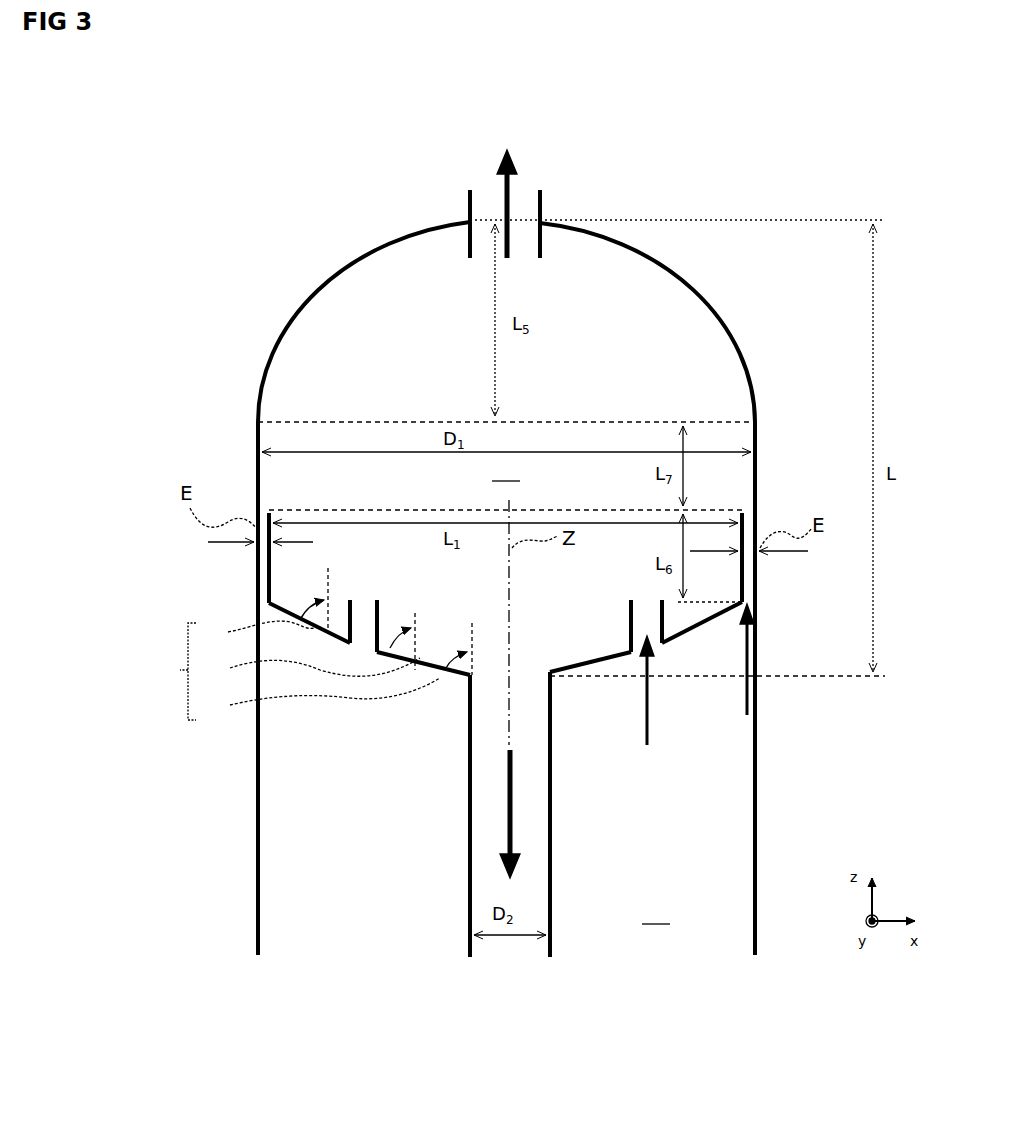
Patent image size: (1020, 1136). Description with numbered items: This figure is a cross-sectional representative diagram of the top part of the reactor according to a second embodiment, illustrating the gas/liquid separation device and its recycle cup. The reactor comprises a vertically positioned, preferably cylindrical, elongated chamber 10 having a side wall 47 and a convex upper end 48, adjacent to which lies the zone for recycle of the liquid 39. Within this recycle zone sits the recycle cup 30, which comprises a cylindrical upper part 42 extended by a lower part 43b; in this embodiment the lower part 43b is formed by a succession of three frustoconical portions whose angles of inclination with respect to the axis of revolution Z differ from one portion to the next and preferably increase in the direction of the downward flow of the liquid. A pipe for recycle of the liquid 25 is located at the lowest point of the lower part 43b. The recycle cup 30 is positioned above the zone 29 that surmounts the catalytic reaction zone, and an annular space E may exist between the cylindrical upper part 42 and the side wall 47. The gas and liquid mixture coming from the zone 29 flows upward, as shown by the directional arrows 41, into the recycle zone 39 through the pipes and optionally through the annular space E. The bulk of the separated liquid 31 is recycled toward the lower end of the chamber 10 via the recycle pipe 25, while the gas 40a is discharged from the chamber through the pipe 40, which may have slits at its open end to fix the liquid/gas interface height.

The chamber 10 is at (427, 588).
The pipe for recycle of the liquid 25 is at (468, 812).
The zone surmounting the catalytic reaction zone 29 is at (656, 913).
The recycle cup 30 is at (400, 616).
The separated liquid 31 is at (515, 810).
The zone for recycle of the liquid 39 is at (505, 471).
The pipe 40 is at (545, 215).
The gas 40a is at (504, 198).
The directional arrows 41 is at (746, 702).
The cylindrical upper part 42 is at (262, 568).
The lower part 43b is at (180, 670).
The side wall 47 is at (258, 748).
The upper end 48 is at (320, 275).